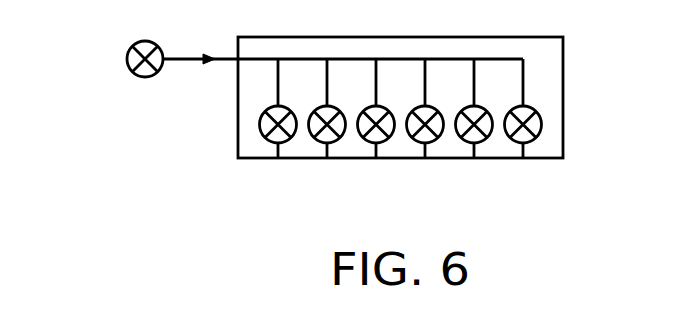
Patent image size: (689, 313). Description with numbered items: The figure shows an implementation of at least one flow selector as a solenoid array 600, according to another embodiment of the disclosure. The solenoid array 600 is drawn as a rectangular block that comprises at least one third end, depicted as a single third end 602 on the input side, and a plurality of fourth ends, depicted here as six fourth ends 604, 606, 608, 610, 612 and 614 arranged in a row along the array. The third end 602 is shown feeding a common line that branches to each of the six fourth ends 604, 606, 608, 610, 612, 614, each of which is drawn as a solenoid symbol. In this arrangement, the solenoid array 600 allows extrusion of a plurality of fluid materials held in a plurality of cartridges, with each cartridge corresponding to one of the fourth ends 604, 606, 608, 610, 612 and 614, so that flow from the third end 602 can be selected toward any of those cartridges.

The solenoid array 600 is at (563, 77).
The third end 602 is at (126, 57).
The fourth end 604 is at (278, 160).
The fourth end 606 is at (327, 160).
The fourth end 608 is at (376, 160).
The fourth end 610 is at (425, 160).
The fourth end 612 is at (474, 160).
The fourth end 614 is at (523, 160).